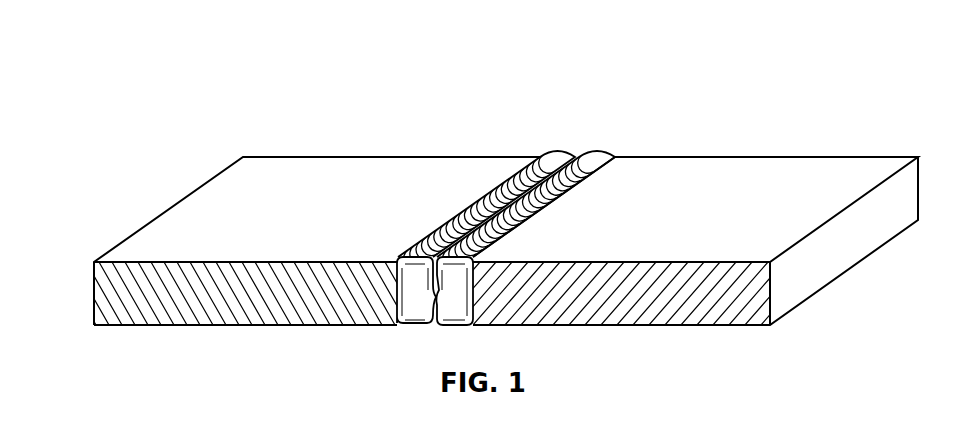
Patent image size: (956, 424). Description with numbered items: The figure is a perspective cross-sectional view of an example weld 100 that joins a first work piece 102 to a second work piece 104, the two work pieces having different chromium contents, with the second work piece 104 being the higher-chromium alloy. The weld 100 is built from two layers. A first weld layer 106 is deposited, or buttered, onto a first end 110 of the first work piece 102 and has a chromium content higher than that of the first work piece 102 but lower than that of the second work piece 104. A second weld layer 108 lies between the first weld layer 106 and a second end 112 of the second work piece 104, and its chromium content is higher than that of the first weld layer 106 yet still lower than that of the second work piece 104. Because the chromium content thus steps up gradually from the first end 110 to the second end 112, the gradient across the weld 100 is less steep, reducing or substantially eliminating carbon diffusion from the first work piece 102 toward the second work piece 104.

The weld 100 is at (140, 45).
The first work piece 102 is at (193, 204).
The second work piece 104 is at (762, 173).
The first weld layer 106 is at (533, 175).
The second weld layer 108 is at (593, 160).
The first end 110 is at (470, 207).
The second end 112 is at (567, 197).